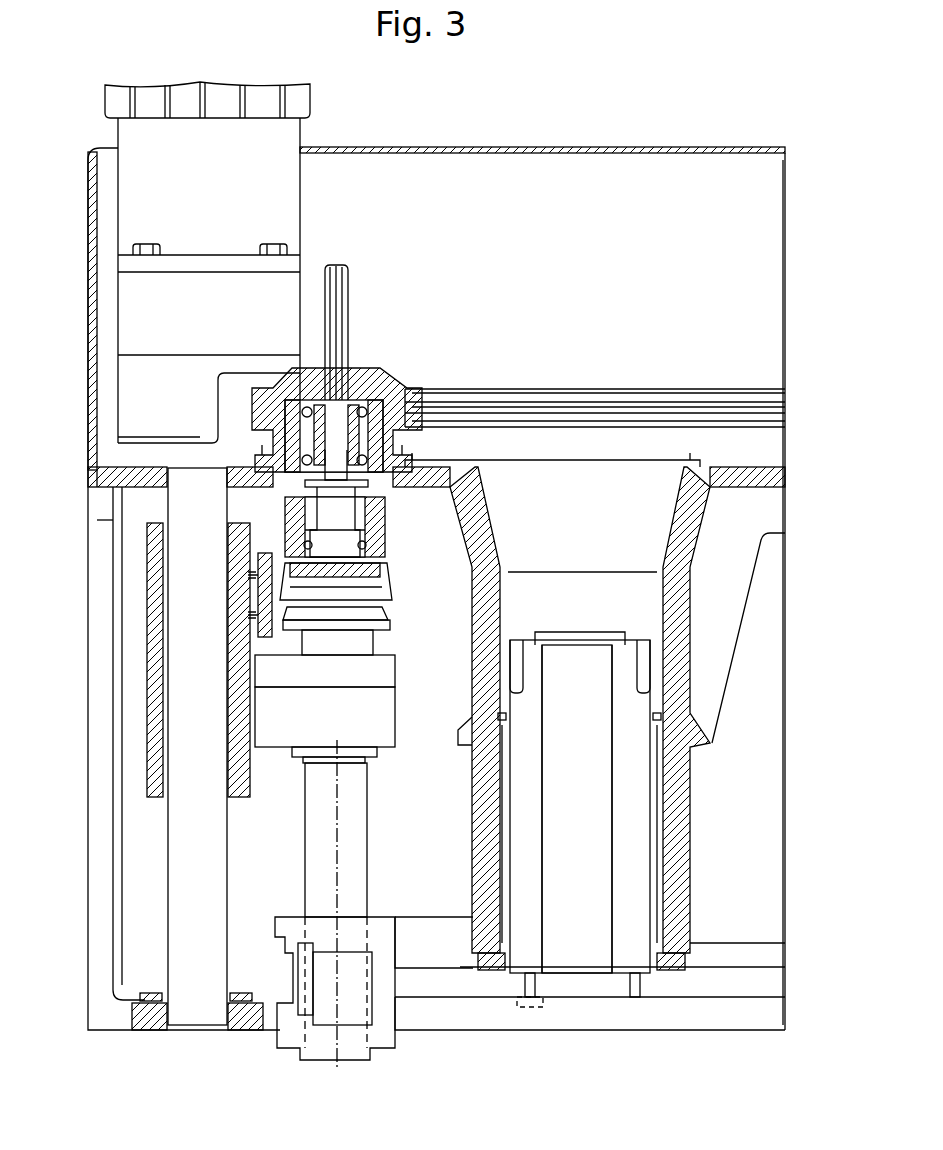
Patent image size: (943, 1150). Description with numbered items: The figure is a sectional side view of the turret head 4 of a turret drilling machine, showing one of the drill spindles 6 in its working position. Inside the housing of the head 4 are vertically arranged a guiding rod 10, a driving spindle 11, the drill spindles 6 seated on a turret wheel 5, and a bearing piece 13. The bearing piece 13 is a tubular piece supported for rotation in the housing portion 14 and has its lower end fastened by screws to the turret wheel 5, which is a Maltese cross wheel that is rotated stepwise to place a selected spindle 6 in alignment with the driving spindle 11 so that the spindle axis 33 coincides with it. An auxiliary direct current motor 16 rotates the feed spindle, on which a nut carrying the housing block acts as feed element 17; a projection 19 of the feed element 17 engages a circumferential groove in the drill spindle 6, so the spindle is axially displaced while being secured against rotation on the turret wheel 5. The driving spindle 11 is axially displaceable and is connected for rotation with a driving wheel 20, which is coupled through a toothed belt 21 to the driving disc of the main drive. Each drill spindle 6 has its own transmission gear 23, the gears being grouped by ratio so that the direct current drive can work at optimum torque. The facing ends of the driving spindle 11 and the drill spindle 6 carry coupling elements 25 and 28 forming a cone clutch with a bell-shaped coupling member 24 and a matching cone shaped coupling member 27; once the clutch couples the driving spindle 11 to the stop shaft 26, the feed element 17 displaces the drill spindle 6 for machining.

The turret head 4 is at (78, 1010).
The turret wheel 5 is at (435, 980).
The drill spindle 6 is at (347, 837).
The guiding rod 10 is at (210, 857).
The driving spindle 11 is at (348, 300).
The bearing piece 13 is at (620, 810).
The housing portion 14 is at (683, 767).
The auxiliary direct current motor 16 is at (280, 217).
The feed element 17 is at (265, 540).
The projection 19 is at (272, 640).
The driving wheel 20 is at (393, 378).
The toothed belt 21 is at (478, 397).
The transmission gear 23 is at (370, 676).
The bell-shaped coupling member 24 is at (398, 578).
The coupling element 25 is at (388, 570).
The stop shaft 26 is at (335, 630).
The cone shaped coupling member 27 is at (396, 615).
The coupling element 28 is at (375, 608).
The axis 33 is at (337, 903).